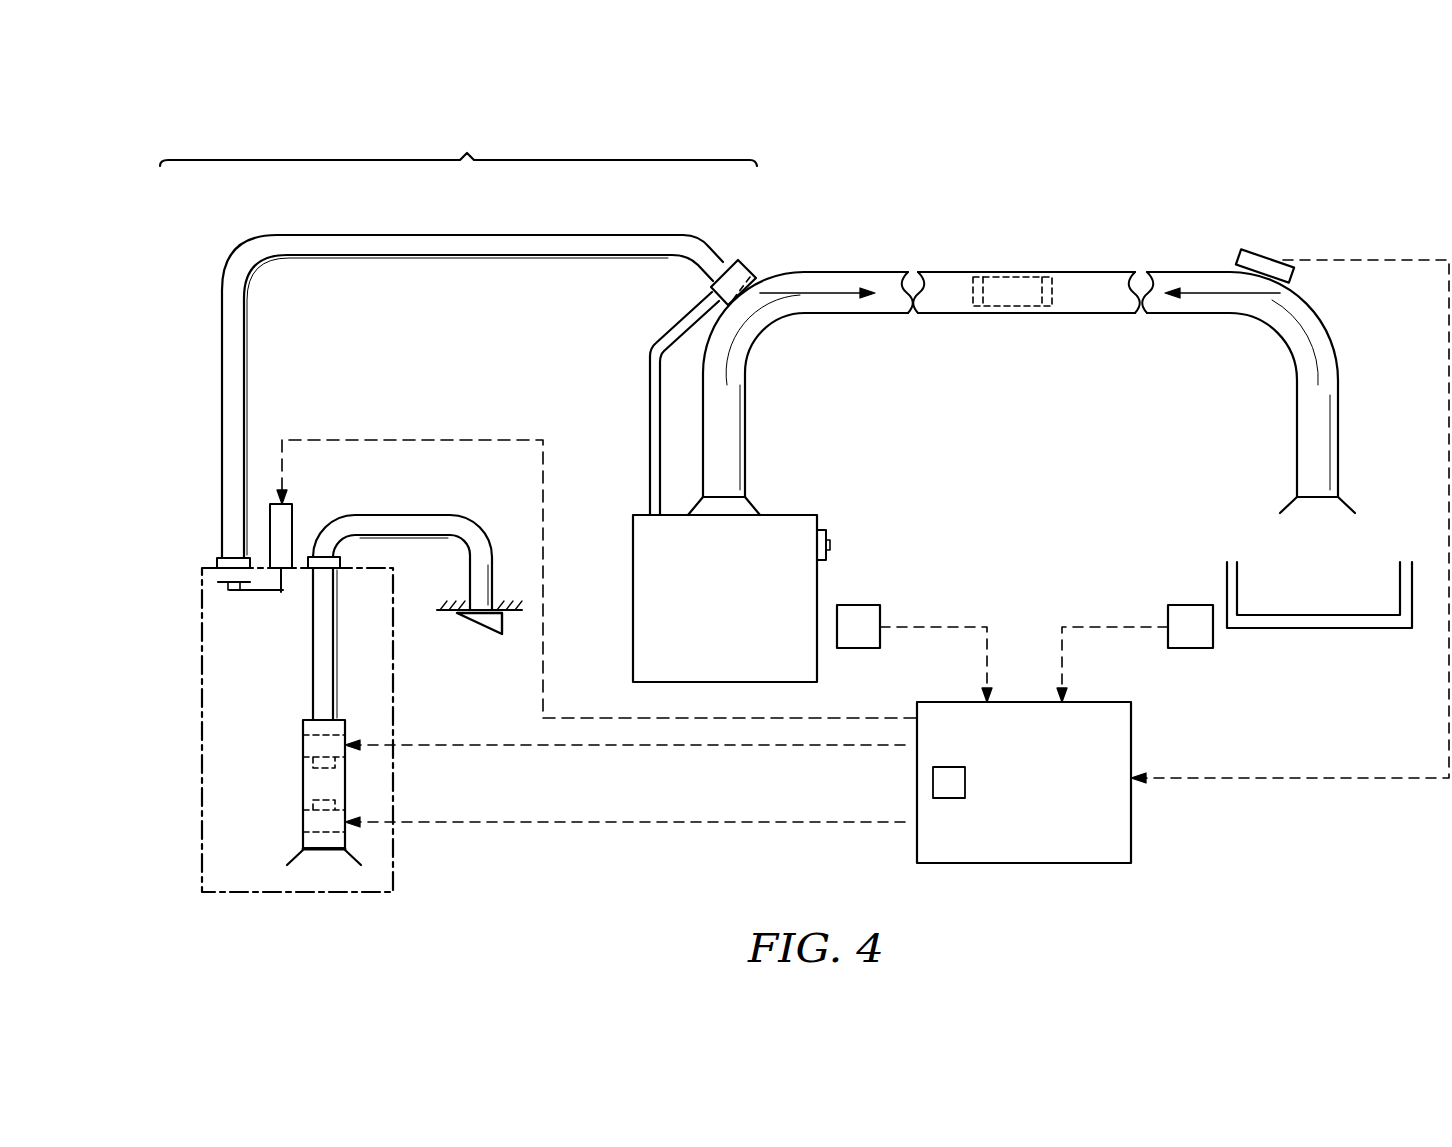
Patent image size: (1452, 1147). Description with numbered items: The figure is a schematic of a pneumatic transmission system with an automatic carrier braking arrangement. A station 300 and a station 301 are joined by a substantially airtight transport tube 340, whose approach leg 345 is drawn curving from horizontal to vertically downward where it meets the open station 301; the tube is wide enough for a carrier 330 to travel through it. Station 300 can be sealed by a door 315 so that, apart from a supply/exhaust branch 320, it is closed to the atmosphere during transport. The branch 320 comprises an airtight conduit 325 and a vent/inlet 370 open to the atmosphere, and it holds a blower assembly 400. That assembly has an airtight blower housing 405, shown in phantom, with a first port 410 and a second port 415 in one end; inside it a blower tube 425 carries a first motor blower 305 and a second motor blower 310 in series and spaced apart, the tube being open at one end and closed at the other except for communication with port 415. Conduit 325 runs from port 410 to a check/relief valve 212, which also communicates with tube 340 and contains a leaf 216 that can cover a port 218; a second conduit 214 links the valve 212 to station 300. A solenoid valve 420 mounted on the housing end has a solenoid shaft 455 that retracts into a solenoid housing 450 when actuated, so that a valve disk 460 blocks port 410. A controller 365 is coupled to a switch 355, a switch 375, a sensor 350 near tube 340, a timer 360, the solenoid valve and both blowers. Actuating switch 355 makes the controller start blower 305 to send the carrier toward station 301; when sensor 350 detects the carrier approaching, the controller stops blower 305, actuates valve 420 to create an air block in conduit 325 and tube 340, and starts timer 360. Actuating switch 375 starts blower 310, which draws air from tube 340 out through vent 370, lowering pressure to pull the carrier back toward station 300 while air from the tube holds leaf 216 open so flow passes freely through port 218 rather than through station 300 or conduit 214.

The check/relief valve 212 is at (712, 287).
The second conduit 214 is at (650, 396).
The leaf 216 is at (746, 268).
The port 218 is at (742, 284).
The station 300 is at (633, 606).
The station 301 is at (1357, 628).
The first motor blower 305 is at (303, 748).
The second motor blower 310 is at (303, 820).
The door 315 is at (830, 540).
The supply/exhaust branch 320 is at (458, 144).
The conduit 325 is at (428, 234).
The carrier 330 is at (1014, 276).
The transport tube 340 is at (1090, 272).
The approach leg 345 is at (1340, 410).
The sensor 350 is at (1258, 256).
The switch 355 is at (865, 605).
The timer 360 is at (965, 783).
The controller 365 is at (1026, 756).
The vent/inlet 370 is at (425, 515).
The switch 375 is at (1185, 605).
The blower assembly 400 is at (507, 687).
The blower housing 405 is at (202, 836).
The first port 410 is at (212, 562).
The second port 415 is at (340, 560).
The solenoid valve 420 is at (316, 472).
The blower tube 425 is at (303, 728).
The solenoid housing 450 is at (293, 523).
The solenoid shaft 455 is at (283, 592).
The valve disk 460 is at (222, 585).